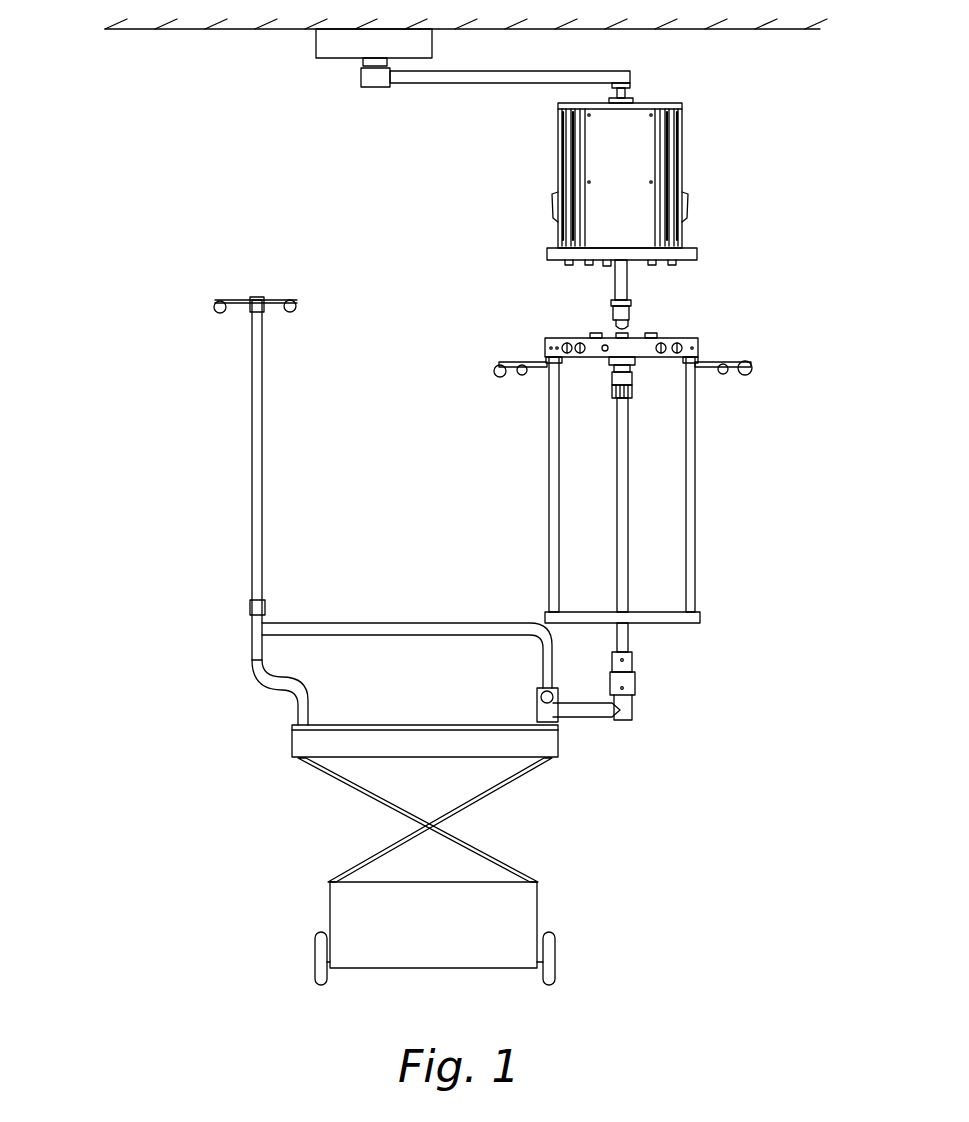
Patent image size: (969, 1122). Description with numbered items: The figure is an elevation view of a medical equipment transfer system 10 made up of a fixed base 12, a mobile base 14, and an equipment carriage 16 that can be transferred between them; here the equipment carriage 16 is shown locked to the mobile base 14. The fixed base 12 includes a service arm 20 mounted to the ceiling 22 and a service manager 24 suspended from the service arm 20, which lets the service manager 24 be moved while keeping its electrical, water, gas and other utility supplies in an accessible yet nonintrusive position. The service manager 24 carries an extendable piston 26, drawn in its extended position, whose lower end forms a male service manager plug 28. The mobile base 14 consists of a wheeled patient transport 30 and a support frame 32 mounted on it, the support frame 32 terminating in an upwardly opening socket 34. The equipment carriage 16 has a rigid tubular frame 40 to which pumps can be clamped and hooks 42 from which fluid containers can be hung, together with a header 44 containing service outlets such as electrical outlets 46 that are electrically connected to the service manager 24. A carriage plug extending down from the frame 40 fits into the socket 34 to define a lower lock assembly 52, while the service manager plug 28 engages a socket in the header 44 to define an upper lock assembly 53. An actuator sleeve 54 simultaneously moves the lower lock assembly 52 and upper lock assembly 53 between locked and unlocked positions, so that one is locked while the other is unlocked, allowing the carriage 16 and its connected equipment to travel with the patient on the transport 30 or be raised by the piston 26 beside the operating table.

The equipment transfer system 10 is at (166, 262).
The fixed base 12 is at (386, 117).
The mobile base 14 is at (149, 722).
The equipment carriage 16 is at (795, 488).
The service arm 20 is at (462, 84).
The ceiling 22 is at (196, 29).
The service manager 24 is at (682, 103).
The extendable piston 26 is at (627, 286).
The service manager plug 28 is at (633, 320).
The wheeled patient transport 30 is at (295, 756).
The support frame 32 is at (250, 632).
The socket 34 is at (636, 672).
The tubular frame 40 is at (696, 512).
The hooks 42 is at (750, 374).
The header 44 is at (700, 342).
The electrical outlets 46 is at (560, 341).
The lower lock assembly 52 is at (695, 679).
The upper lock assembly 53 is at (724, 291).
The actuator sleeve 54 is at (612, 388).